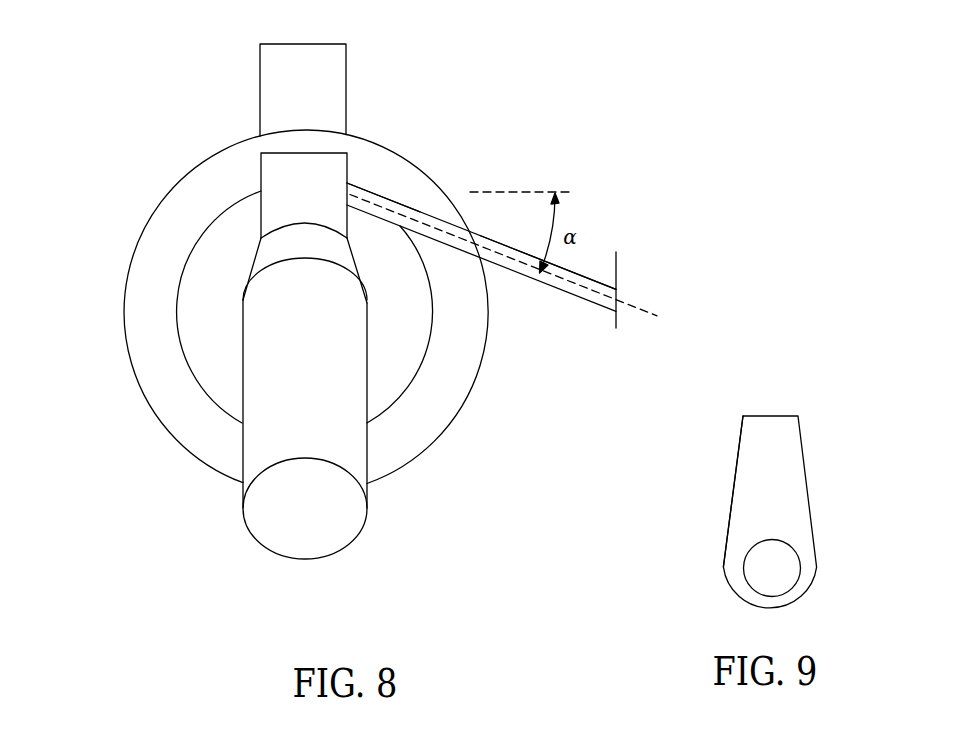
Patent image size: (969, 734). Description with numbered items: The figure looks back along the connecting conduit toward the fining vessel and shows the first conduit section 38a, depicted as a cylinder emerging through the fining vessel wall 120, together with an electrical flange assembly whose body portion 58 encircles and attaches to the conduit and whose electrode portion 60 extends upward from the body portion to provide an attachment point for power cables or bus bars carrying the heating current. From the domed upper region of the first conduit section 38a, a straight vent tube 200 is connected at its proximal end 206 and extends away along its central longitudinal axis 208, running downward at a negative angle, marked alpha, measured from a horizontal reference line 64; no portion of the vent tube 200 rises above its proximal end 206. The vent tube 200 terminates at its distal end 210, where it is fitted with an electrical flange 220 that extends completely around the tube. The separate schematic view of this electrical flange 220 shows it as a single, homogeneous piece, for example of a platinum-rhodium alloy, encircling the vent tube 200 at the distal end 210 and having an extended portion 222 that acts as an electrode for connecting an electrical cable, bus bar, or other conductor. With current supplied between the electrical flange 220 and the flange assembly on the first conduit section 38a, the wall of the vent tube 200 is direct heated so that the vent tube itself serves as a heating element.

In FIG. 8, the body portion 58 is at (155, 212).
In FIG. 8, the electrode portion 60 is at (346, 83).
In FIG. 8, the fining vessel wall 120 is at (257, 165).
In FIG. 8, the first conduit section 38a is at (367, 327).
In FIG. 8, the vent tube 200 is at (543, 291).
In FIG. 9, the vent tube 200 is at (792, 532).
In FIG. 8, the proximal end 206 is at (358, 183).
In FIG. 8, the distal end 210 is at (592, 277).
In FIG. 9, the distal end 210 is at (798, 577).
In FIG. 8, the central longitudinal axis 208 is at (642, 310).
In FIG. 8, the electrical flange 220 is at (617, 265).
In FIG. 9, the electrical flange 220 is at (793, 404).
In FIG. 9, the extended portion 222 is at (742, 437).
In FIG. 8, the reference line 64 is at (508, 192).